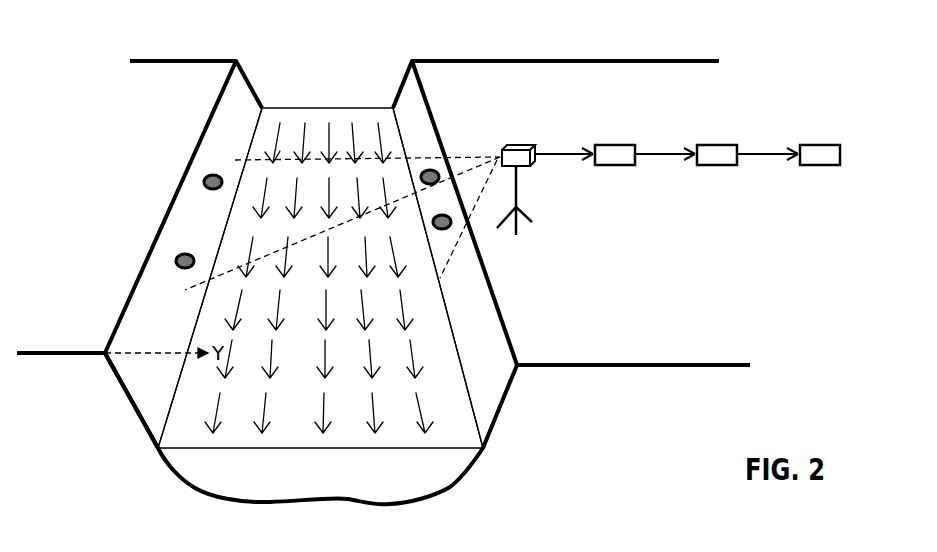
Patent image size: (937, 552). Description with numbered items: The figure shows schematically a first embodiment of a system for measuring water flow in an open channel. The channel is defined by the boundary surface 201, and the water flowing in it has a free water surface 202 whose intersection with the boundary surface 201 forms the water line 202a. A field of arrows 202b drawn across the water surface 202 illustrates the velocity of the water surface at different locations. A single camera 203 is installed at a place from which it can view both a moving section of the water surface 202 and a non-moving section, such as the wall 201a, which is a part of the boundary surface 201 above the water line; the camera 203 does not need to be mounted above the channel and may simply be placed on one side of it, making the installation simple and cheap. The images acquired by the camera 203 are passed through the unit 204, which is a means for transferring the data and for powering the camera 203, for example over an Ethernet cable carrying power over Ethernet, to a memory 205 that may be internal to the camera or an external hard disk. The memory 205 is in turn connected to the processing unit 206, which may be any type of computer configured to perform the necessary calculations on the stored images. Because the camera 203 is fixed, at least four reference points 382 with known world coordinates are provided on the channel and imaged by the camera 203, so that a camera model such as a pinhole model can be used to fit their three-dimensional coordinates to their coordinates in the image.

The boundary surface 201 is at (116, 444).
The wall 201a is at (140, 374).
The water surface 202 is at (298, 122).
The water line 202a is at (247, 157).
The arrows 202b is at (353, 130).
The camera 203 is at (518, 150).
The unit 204 is at (614, 145).
The memory 205 is at (718, 145).
The processing unit 206 is at (816, 145).
The reference points 382 is at (206, 177).